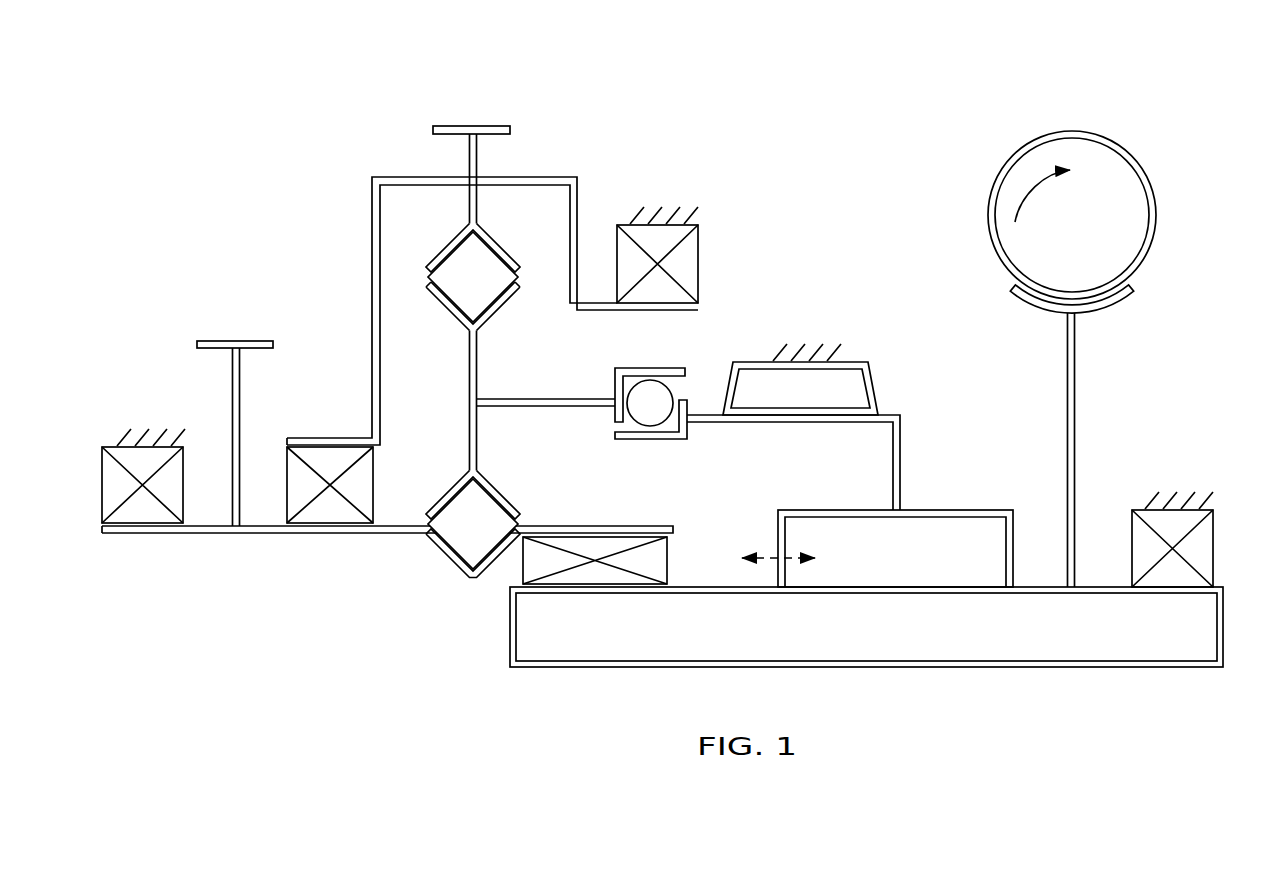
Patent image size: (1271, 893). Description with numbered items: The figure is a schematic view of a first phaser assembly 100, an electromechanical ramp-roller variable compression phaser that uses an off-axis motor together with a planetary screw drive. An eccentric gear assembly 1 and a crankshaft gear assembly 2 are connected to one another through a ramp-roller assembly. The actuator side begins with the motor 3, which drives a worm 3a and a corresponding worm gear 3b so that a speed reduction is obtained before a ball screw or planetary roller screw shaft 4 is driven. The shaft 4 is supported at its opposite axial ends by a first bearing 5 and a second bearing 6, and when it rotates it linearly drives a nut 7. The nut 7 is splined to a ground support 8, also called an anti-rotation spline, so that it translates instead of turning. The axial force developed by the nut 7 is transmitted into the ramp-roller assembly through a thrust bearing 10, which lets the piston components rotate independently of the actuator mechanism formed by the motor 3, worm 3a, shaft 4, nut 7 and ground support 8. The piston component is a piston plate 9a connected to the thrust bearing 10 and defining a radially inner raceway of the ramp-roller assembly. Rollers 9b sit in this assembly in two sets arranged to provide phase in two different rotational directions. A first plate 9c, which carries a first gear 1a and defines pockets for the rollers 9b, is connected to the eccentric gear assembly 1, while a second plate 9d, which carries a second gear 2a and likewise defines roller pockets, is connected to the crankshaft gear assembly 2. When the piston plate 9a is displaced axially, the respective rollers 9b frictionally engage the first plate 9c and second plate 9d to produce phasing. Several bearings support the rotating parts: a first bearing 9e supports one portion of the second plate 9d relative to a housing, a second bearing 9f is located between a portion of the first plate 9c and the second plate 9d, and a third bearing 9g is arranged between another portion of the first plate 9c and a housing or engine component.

The first phaser assembly 100 is at (300, 227).
The eccentric gear assembly 1 is at (180, 328).
The first gear 1a is at (255, 340).
The crankshaft gear assembly 2 is at (550, 162).
The second gear 2a is at (453, 122).
The motor 3 is at (1122, 124).
The worm 3a is at (1156, 221).
The worm gear 3b is at (1074, 467).
The planetary roller screw shaft 4 is at (1224, 661).
The first bearing 5 is at (525, 574).
The second bearing 6 is at (1216, 561).
The nut 7 is at (948, 509).
The ground support 8 is at (858, 360).
The piston plate 9a is at (481, 441).
The rollers 9b is at (455, 272).
The first plate 9c is at (450, 553).
The second plate 9d is at (496, 239).
The first bearing 9e is at (689, 266).
The second bearing 9f is at (305, 514).
The third bearing 9g is at (140, 514).
The thrust bearing 10 is at (690, 368).